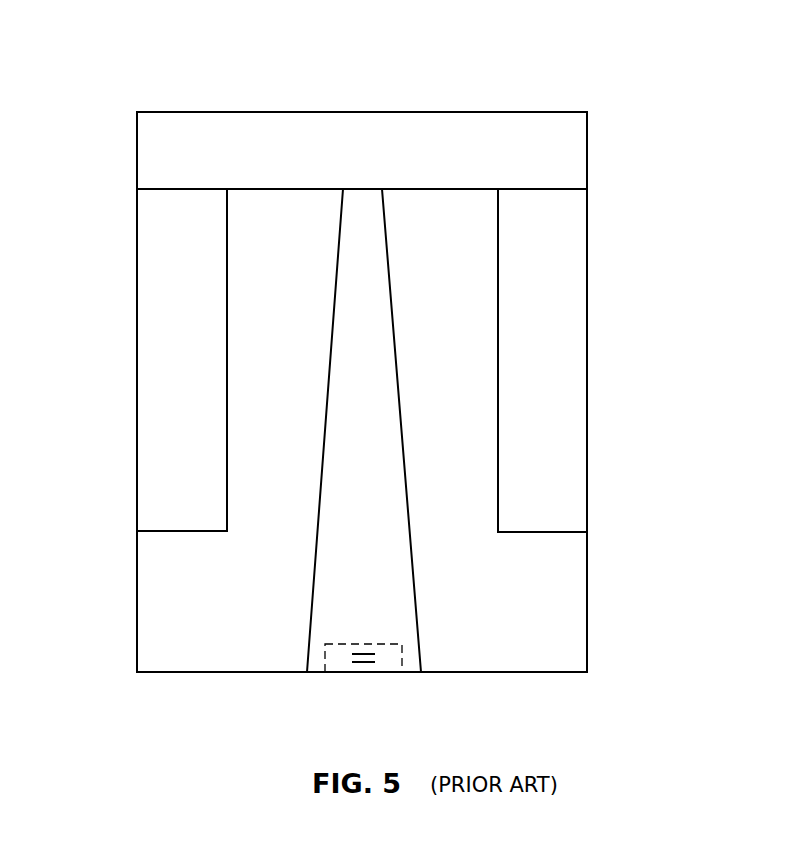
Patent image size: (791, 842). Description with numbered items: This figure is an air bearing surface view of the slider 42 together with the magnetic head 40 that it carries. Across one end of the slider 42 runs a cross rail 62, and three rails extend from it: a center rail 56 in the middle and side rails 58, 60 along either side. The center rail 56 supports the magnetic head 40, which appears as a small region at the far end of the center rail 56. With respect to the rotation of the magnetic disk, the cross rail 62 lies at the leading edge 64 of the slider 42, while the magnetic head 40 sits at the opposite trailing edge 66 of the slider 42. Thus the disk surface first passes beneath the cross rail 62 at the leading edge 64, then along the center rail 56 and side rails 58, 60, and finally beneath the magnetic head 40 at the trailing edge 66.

The slider 42 is at (137, 619).
The cross rail 62 is at (282, 125).
The leading edge 64 is at (462, 112).
The side rail 58 is at (154, 271).
The side rail 60 is at (570, 272).
The center rail 56 is at (346, 305).
The magnetic head 40 is at (341, 663).
The trailing edge 66 is at (485, 672).